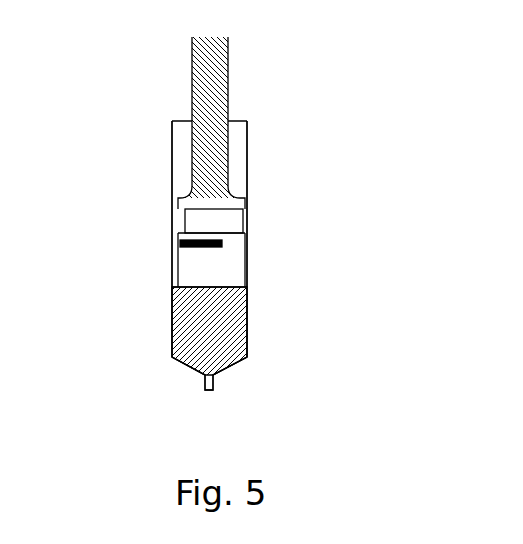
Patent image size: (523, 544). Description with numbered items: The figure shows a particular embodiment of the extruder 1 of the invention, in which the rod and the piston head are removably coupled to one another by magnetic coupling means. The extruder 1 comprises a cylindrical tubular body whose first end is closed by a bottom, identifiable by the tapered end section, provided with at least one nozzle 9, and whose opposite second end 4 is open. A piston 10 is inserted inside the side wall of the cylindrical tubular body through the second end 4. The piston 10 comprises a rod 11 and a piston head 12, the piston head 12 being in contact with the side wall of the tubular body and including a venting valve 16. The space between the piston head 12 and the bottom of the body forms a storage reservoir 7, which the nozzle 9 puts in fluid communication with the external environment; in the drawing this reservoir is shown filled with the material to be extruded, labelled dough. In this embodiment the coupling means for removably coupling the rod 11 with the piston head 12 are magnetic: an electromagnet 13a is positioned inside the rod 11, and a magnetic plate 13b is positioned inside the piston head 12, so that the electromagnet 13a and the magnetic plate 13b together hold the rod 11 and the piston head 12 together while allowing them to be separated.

The extruder 1 is at (342, 78).
The piston 10 is at (163, 52).
The rod 11 is at (213, 100).
The piston head 12 is at (180, 236).
The electromagnet 13a is at (222, 216).
The magnetic plate 13b is at (188, 243).
The venting valve 16 is at (228, 238).
The storage reservoir 7 is at (232, 262).
The second end 4 is at (175, 283).
The nozzle 9 is at (205, 383).
The element dough is at (232, 311).